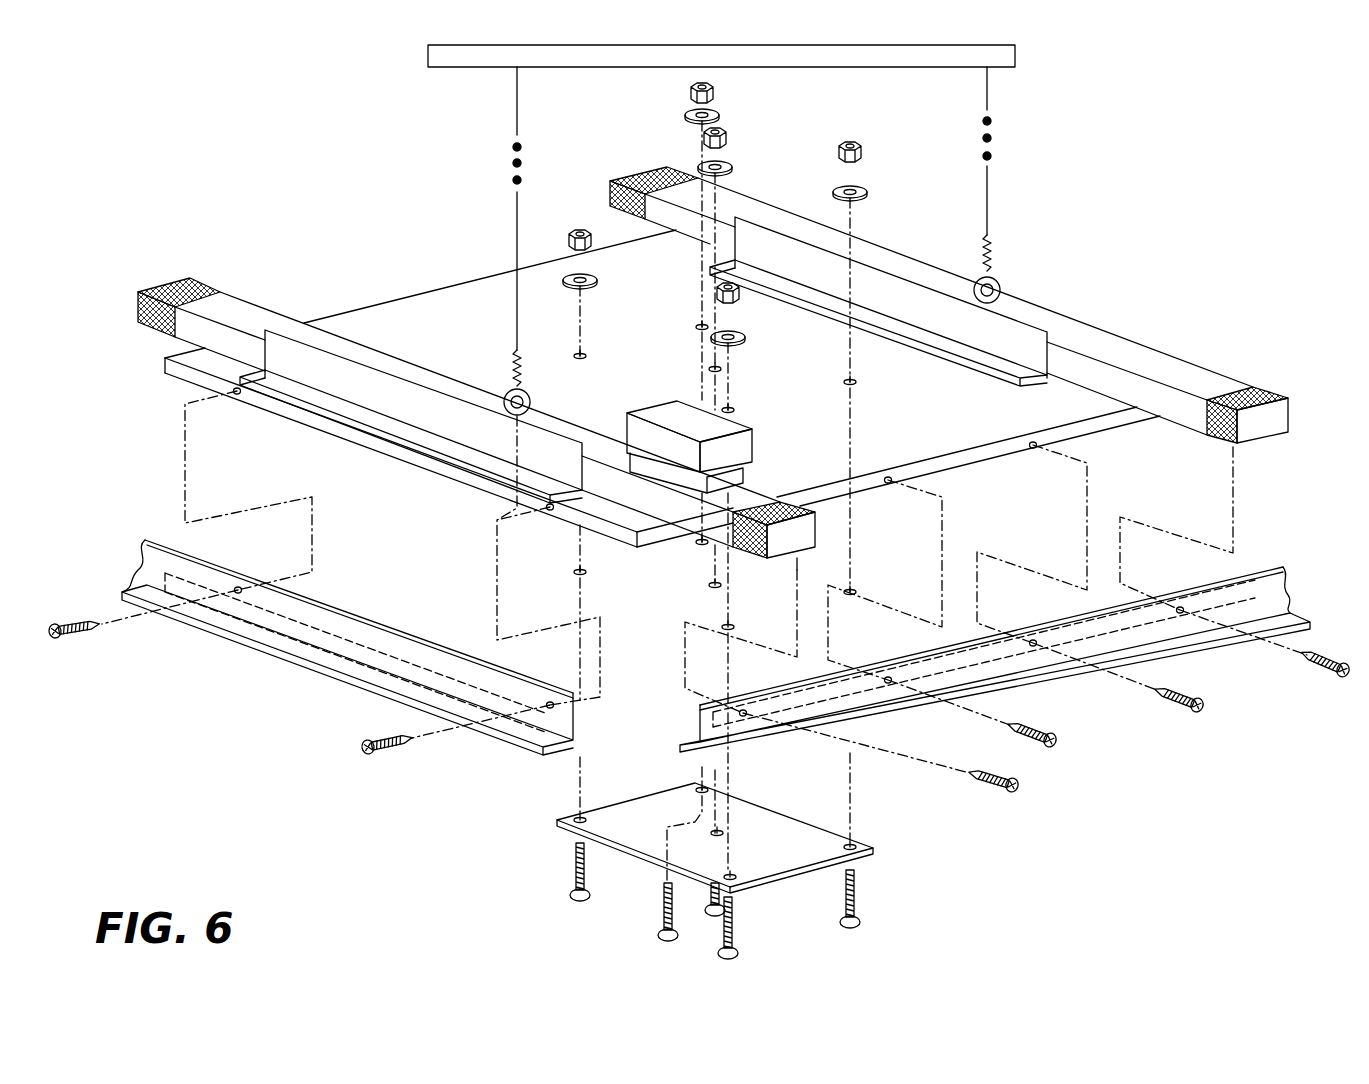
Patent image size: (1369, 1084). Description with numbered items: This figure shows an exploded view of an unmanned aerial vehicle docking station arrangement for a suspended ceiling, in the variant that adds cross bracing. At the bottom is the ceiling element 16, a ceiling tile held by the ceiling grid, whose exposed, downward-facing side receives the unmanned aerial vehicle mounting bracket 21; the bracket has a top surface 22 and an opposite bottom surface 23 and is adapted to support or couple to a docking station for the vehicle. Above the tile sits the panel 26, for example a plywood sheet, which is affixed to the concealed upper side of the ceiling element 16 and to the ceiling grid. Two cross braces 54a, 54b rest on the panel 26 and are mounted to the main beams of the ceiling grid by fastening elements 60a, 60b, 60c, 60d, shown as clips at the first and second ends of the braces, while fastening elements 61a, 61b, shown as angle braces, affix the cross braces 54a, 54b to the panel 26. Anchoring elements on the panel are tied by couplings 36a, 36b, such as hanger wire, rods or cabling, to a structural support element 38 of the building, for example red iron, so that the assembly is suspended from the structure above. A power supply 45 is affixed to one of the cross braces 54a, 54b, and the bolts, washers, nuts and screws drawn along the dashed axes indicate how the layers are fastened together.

The ceiling element 16 is at (340, 593).
The unmanned aerial vehicle mounting bracket 21 is at (785, 870).
The top surface 22 is at (782, 838).
The bottom surface 23 is at (635, 852).
The panel 26 is at (398, 338).
The coupling 36a is at (517, 108).
The coupling 36b is at (987, 87).
The structural support element 38 is at (428, 57).
The power supply 45 is at (680, 460).
The cross brace 54a is at (252, 316).
The cross brace 54b is at (1133, 352).
The fastening element 60a is at (170, 285).
The fastening element 60b is at (640, 174).
The fastening element 60c is at (790, 504).
The fastening element 60d is at (1277, 395).
The fastening element 61a is at (327, 375).
The fastening element 61b is at (992, 325).